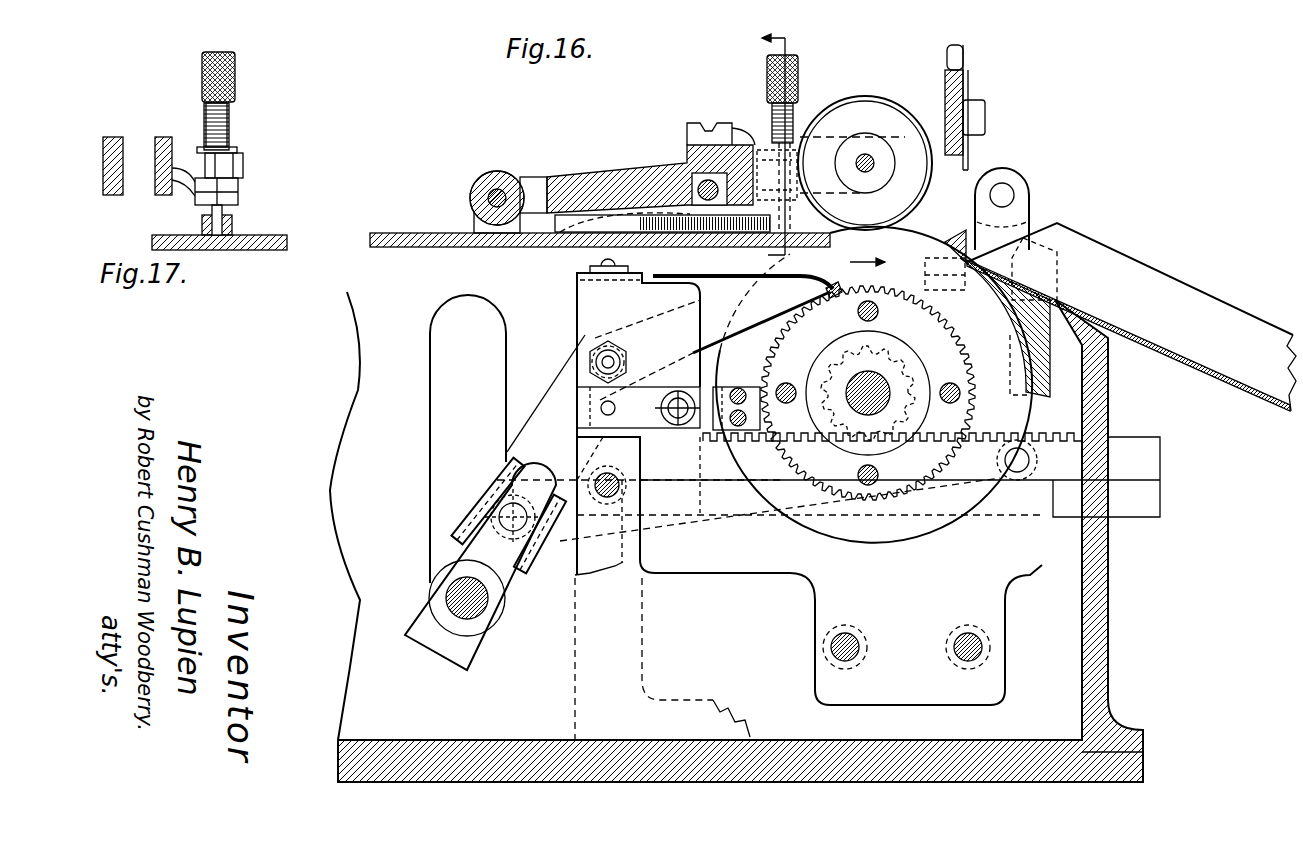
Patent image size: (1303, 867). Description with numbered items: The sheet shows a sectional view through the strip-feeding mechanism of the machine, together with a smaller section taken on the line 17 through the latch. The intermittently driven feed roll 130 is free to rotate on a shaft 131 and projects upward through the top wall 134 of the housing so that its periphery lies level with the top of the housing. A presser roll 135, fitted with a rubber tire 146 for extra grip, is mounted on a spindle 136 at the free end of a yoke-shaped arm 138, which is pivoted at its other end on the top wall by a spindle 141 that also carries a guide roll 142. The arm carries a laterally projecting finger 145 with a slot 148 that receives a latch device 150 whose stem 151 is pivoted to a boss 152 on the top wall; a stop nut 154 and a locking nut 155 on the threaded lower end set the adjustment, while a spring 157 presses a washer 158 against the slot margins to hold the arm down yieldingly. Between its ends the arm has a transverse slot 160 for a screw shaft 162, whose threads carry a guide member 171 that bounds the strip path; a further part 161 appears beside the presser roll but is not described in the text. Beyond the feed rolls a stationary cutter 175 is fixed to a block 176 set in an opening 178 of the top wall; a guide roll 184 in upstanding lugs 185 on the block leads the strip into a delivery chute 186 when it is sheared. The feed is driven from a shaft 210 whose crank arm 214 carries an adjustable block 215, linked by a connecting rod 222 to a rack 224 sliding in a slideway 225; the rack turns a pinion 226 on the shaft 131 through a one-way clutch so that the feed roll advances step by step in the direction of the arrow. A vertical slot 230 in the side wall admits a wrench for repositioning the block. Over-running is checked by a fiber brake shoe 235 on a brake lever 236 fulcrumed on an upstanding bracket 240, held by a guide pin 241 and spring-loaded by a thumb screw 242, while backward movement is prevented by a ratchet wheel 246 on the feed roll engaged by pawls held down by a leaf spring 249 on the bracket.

In FIG. 16, the section line 17 is at (753, 148).
In FIG. 16, the feed roll 130 is at (992, 409).
In FIG. 16, the shaft 131 is at (885, 378).
In FIG. 17, the top wall 134 is at (272, 235).
In FIG. 16, the top wall 134 is at (390, 233).
In FIG. 16, the presser roll 135 is at (845, 118).
In FIG. 16, the spindle 136 is at (867, 158).
In FIG. 17, the arm 138 is at (163, 137).
In FIG. 16, the arm 138 is at (600, 175).
In FIG. 16, the spindle 141 is at (503, 197).
In FIG. 16, the guide roll 142 is at (490, 170).
In FIG. 17, the finger 145 is at (244, 161).
In FIG. 16, the rubber tire 146 is at (910, 83).
In FIG. 17, the slot 148 is at (240, 187).
In FIG. 17, the latch device 150 is at (238, 109).
In FIG. 16, the latch device 150 is at (805, 89).
In FIG. 17, the stem 151 is at (233, 71).
In FIG. 16, the stem 151 is at (767, 80).
In FIG. 17, the boss 152 is at (232, 223).
In FIG. 16, the boss 152 is at (917, 242).
In FIG. 17, the stop nut 154 is at (196, 184).
In FIG. 17, the locking nut 155 is at (196, 199).
In FIG. 17, the spring 157 is at (204, 128).
In FIG. 17, the washer 158 is at (240, 148).
In FIG. 16, the transverse slot 160 is at (748, 108).
In FIG. 16, the plate 161 is at (968, 59).
In FIG. 16, the screw shaft 162 is at (692, 178).
In FIG. 16, the guide member 171 is at (665, 224).
In FIG. 16, the stationary cutter 175 is at (690, 140).
In FIG. 16, the block 176 is at (1050, 367).
In FIG. 16, the opening 178 is at (1107, 341).
In FIG. 16, the guide roll 184 is at (1037, 180).
In FIG. 16, the lugs 185 is at (1010, 233).
In FIG. 16, the delivery chute 186 is at (1133, 328).
In FIG. 16, the shaft 210 is at (455, 597).
In FIG. 16, the crank arm 214 is at (535, 440).
In FIG. 16, the block 215 is at (480, 487).
In FIG. 16, the connecting rod 222 is at (662, 474).
In FIG. 16, the rack 224 is at (1160, 460).
In FIG. 16, the slideway 225 is at (1028, 503).
In FIG. 16, the pinion 226 is at (877, 383).
In FIG. 16, the slot 230 is at (443, 377).
In FIG. 16, the brake shoe 235 is at (739, 386).
In FIG. 16, the brake lever 236 is at (638, 408).
In FIG. 16, the bracket 240 is at (638, 417).
In FIG. 16, the guide pin 241 is at (604, 404).
In FIG. 16, the thumb screw 242 is at (678, 398).
In FIG. 16, the ratchet wheel 246 is at (861, 393).
In FIG. 16, the leaf spring 249 is at (708, 276).